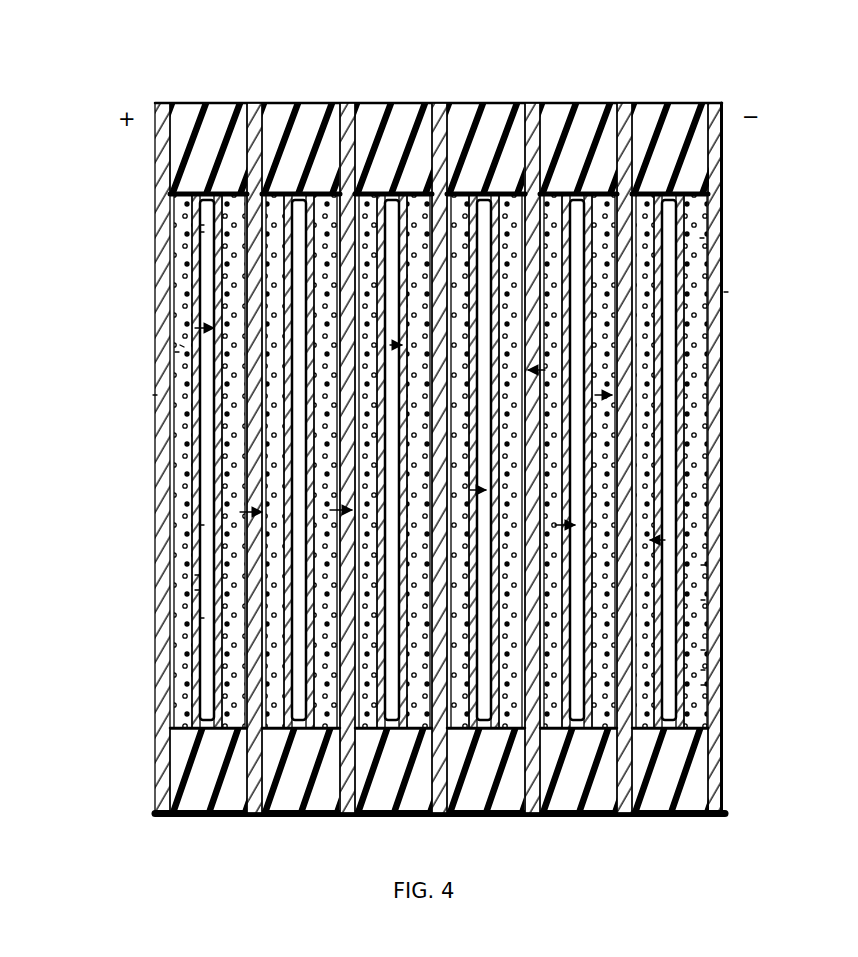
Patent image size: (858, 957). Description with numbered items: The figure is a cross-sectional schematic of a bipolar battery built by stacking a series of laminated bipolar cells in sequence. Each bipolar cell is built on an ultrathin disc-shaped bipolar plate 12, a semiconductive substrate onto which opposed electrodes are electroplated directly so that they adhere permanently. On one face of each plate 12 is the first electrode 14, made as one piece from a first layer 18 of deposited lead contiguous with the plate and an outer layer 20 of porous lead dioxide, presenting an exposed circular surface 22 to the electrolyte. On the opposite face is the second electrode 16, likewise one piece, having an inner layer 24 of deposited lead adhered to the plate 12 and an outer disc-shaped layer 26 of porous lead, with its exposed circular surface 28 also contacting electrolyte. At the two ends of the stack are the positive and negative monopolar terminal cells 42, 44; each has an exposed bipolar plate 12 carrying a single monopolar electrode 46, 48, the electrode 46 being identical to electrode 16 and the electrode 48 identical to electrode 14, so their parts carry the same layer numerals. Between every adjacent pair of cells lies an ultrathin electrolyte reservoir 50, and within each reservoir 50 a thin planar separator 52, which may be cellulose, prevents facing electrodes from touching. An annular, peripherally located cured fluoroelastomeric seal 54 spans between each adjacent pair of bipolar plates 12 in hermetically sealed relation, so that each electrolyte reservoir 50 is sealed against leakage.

The bipolar plate 12 is at (267, 103).
The first electrode 14 is at (180, 330).
The second electrode 16 is at (200, 515).
The first layer 18 is at (183, 428).
The outer layer 20 is at (200, 258).
The exposed circular surface 22 is at (198, 475).
The inner layer 24 is at (205, 232).
The outer disc-shaped layer 26 is at (195, 590).
The exposed circular surface 28 is at (180, 345).
The positive monopolar terminal cell 42 is at (150, 395).
The negative monopolar terminal cell 44 is at (730, 292).
The monopolar electrode 46 is at (175, 352).
The monopolar electrode 48 is at (712, 238).
The electrolyte reservoir 50 is at (186, 816).
The separator 52 is at (372, 103).
The fluoroelastomeric seal 54 is at (295, 103).